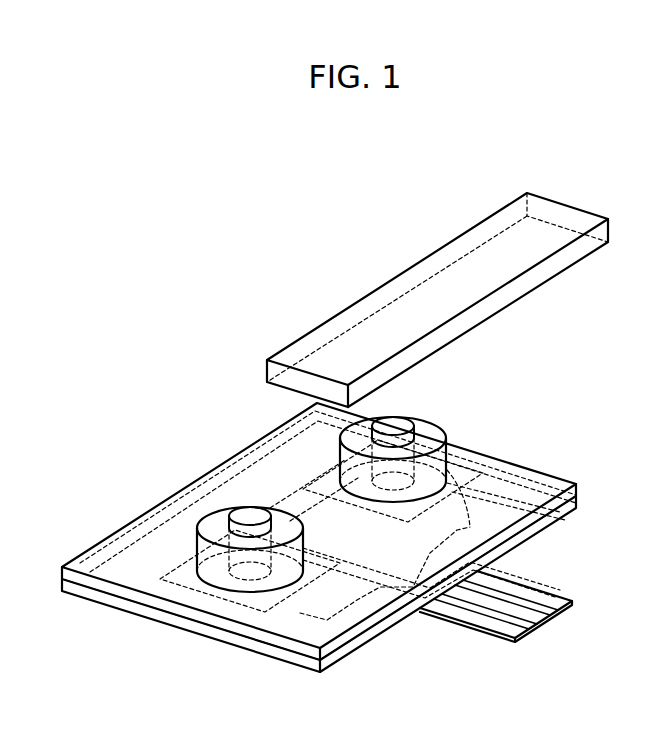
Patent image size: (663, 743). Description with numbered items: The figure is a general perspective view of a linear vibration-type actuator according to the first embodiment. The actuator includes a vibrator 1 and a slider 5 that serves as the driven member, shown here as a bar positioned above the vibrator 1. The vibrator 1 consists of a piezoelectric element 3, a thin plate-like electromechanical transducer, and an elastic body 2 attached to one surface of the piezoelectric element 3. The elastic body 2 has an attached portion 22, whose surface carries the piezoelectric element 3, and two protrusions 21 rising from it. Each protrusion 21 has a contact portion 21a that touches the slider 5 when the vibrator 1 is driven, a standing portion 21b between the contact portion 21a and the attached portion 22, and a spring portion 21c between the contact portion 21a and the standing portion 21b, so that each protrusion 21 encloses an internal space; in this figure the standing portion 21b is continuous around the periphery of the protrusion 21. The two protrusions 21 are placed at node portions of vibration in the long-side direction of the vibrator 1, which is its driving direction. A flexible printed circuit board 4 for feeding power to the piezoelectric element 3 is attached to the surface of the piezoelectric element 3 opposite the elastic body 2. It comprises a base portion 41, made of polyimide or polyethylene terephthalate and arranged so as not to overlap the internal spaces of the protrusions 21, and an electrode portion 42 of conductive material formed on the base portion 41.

The vibrator 1 is at (57, 495).
The elastic body 2 is at (162, 540).
The piezoelectric element 3 is at (207, 632).
The flexible printed circuit board 4 is at (519, 626).
The slider 5 is at (472, 320).
The protrusion 21 is at (343, 437).
The contact portion 21a is at (262, 510).
The standing portion 21b is at (577, 496).
The spring portion 21c is at (303, 555).
The attached portion 22 is at (177, 592).
The base portion 41 is at (520, 588).
The electrode portion 42 is at (517, 627).